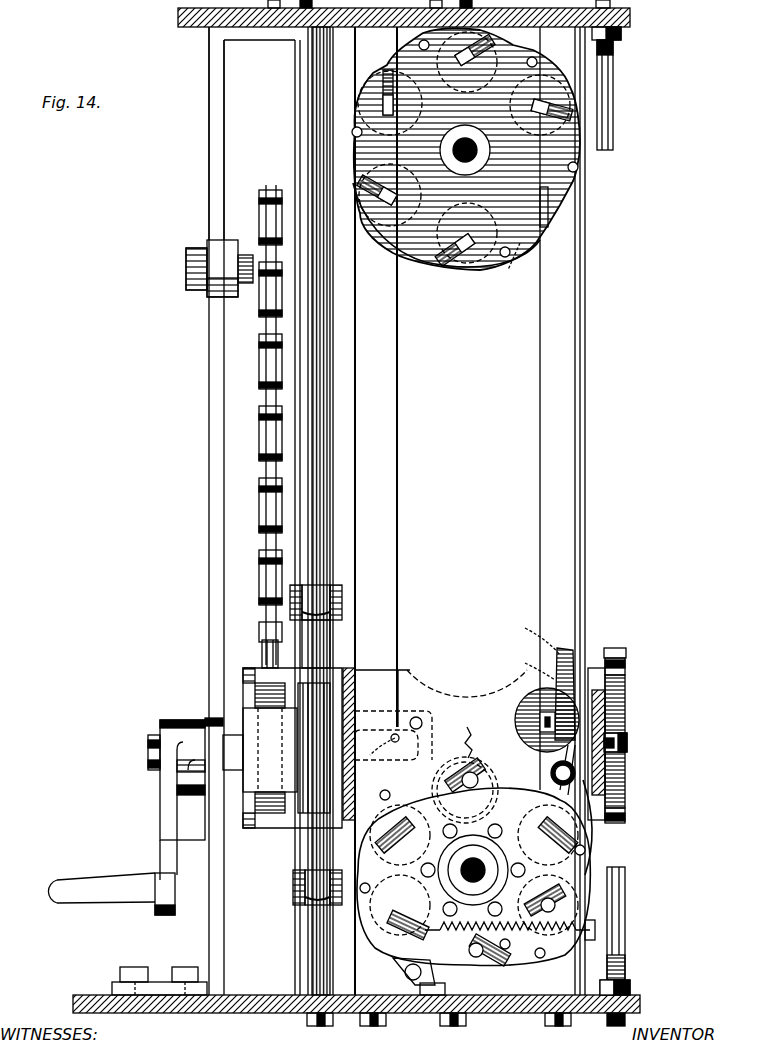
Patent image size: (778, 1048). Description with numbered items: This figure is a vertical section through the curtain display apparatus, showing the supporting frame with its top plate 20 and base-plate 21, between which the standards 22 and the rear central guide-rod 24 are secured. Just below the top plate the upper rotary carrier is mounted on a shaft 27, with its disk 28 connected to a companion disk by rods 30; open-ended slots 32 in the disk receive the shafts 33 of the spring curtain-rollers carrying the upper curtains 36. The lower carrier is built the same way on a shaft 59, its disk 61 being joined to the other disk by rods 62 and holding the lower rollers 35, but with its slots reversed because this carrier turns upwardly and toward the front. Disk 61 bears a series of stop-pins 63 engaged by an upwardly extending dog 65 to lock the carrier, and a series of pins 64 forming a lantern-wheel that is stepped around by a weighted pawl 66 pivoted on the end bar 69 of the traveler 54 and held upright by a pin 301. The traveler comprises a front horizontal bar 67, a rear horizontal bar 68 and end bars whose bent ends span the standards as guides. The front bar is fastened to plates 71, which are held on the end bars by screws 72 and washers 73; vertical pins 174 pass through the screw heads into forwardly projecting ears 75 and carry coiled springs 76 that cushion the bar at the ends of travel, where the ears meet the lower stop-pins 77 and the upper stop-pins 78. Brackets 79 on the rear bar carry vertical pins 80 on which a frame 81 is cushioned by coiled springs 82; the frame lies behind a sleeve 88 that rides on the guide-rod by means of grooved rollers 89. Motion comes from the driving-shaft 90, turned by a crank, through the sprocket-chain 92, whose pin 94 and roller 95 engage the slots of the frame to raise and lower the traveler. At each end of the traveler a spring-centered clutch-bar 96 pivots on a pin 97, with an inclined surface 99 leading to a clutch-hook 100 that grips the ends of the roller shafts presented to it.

The top plate 20 is at (630, 22).
The base-plate 21 is at (640, 998).
The right-hand standards 22 is at (470, 511).
The rear central guide-rod 24 is at (340, 391).
The shaft 27 is at (476, 162).
The disk-plate 28 is at (510, 271).
The rods 30 is at (535, 60).
The slots 32 is at (385, 70).
The shafts 33 is at (384, 98).
The lower rollers 35 is at (478, 800).
The upper curtains 36 is at (385, 240).
The traveler 54 is at (541, 716).
The shaft 59 is at (493, 862).
The disk 61 is at (595, 862).
The rods 62 is at (590, 846).
The stop-pins 63 is at (455, 831).
The pins 64 is at (460, 870).
The dog 65 is at (400, 958).
The pawl 66 is at (447, 725).
The front horizontal bar 67 is at (615, 766).
The rear horizontal bar 68 is at (360, 675).
The end bar 69 is at (415, 685).
The plates 71 is at (596, 668).
The screws 72 is at (628, 742).
The washers 73 is at (616, 738).
The ears 75 is at (626, 668).
The coiled springs 76 is at (613, 706).
The stop-pins 77 is at (627, 908).
The stop-pins 78 is at (615, 88).
The brackets 79 is at (352, 688).
The vertical pins 80 is at (260, 655).
The frame 81 is at (240, 712).
The coiled springs 82 is at (255, 692).
The sleeve 88 is at (335, 618).
The grooved rollers 89 is at (330, 585).
The driving-shaft 90 is at (148, 744).
The sprocket-chain 92 is at (259, 472).
The pin 94 is at (250, 290).
The roller 95 is at (209, 128).
The clutch-bars 96 is at (152, 824).
The pins 97 is at (560, 770).
The inclined surfaces 99 is at (527, 663).
The clutch-hooks 100 is at (540, 718).
The vertical pins 174 is at (618, 650).
The pin 301 is at (393, 746).